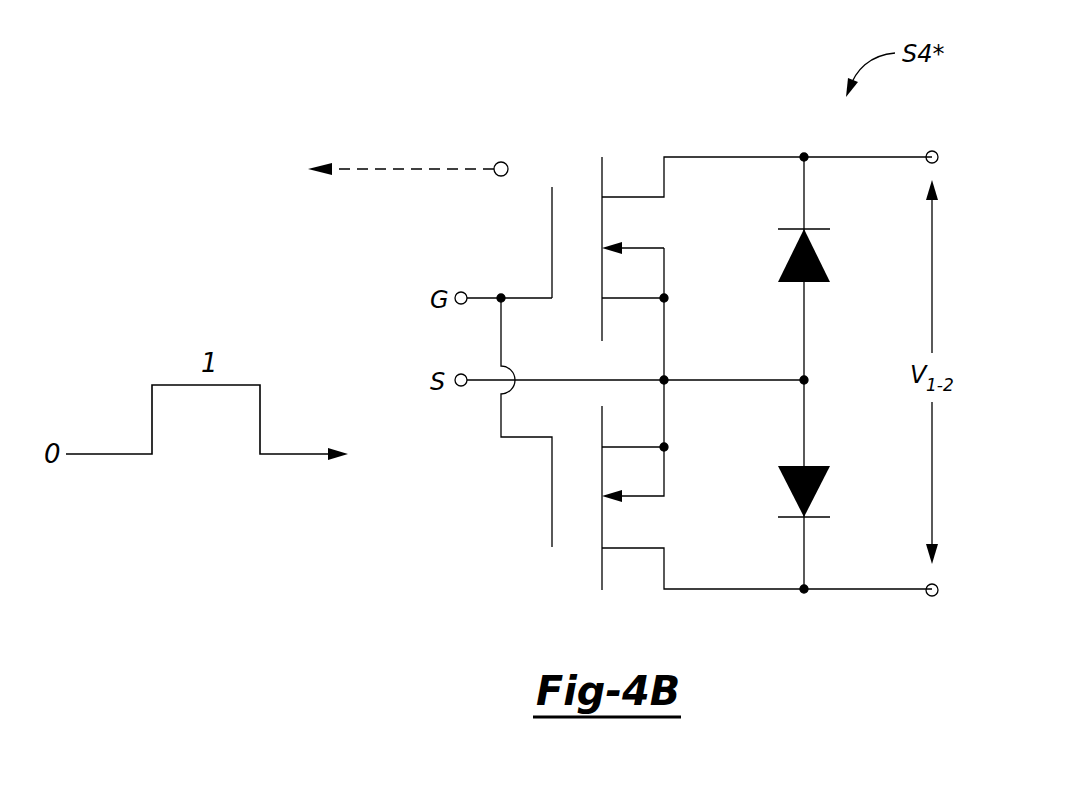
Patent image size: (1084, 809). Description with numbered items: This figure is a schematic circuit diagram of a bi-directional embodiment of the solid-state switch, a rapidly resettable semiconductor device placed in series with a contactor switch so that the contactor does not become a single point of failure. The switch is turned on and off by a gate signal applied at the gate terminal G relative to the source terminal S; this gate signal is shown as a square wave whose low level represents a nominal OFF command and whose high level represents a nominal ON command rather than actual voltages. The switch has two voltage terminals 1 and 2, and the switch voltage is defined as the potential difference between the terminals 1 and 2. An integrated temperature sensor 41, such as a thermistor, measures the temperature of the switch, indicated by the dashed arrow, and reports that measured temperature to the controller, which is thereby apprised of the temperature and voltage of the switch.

The integrated temperature sensor 41 is at (501, 162).
The voltage terminal 1 is at (944, 159).
The voltage terminal 2 is at (944, 592).